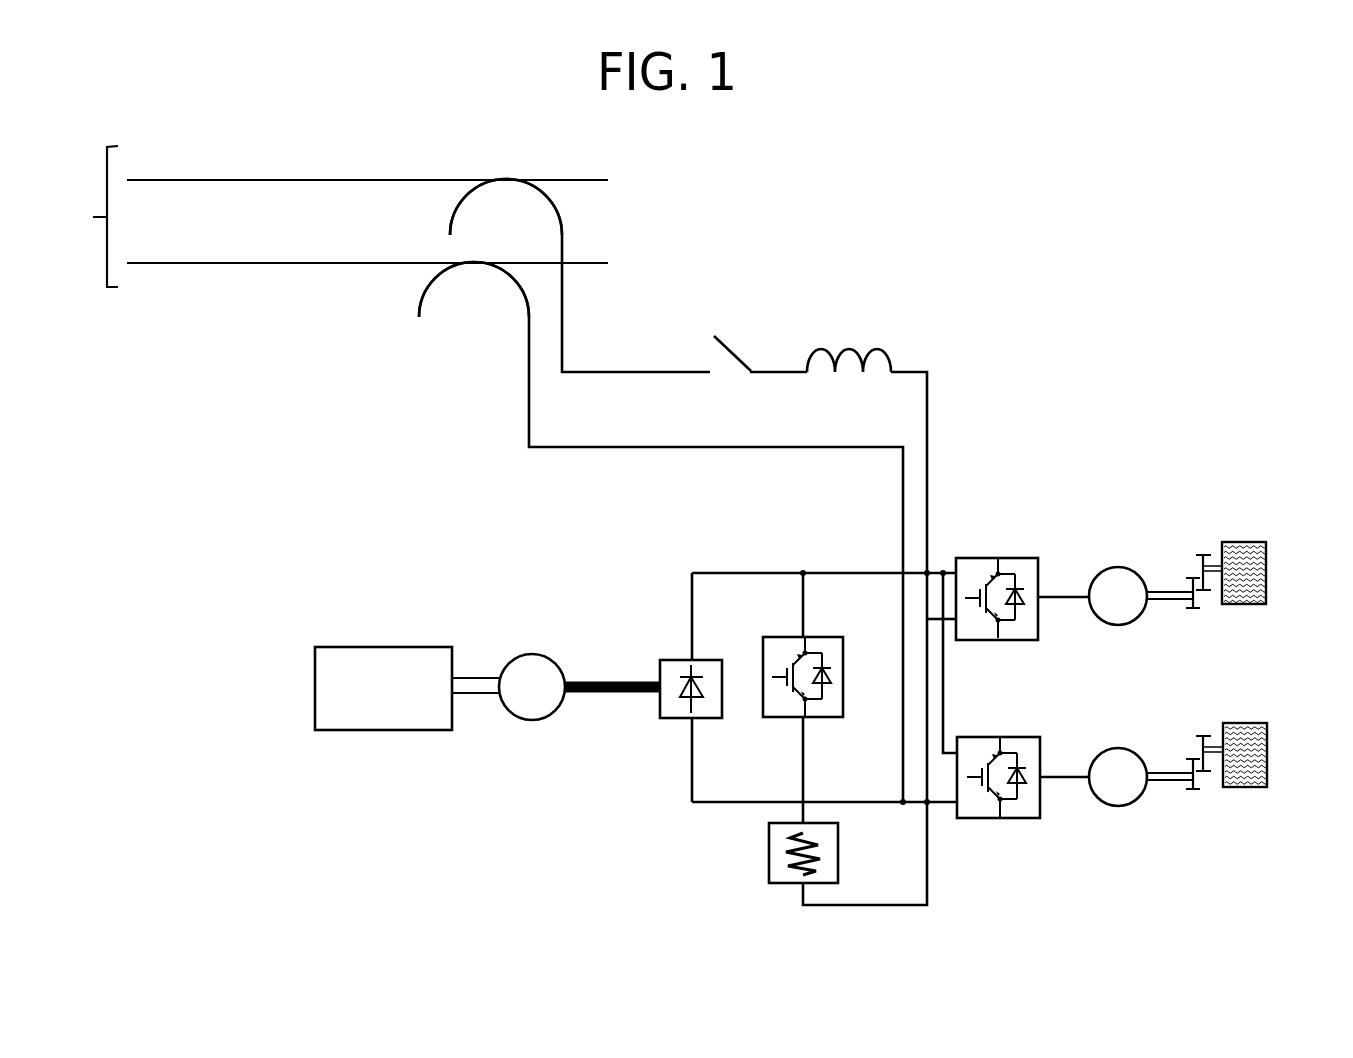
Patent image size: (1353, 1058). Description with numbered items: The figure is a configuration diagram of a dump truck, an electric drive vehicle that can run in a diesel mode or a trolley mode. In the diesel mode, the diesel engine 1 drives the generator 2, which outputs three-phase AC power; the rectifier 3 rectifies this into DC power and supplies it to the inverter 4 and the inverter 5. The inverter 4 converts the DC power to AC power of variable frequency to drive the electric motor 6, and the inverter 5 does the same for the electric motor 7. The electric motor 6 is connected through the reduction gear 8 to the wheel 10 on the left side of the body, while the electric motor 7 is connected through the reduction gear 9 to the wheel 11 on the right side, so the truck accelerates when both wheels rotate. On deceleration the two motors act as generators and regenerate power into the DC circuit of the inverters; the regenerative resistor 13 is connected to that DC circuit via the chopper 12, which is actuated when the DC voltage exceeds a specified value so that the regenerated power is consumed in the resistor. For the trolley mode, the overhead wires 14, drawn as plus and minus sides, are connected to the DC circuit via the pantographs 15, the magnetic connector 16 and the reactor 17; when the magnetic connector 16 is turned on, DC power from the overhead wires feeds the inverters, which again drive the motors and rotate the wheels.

The diesel engine 1 is at (437, 655).
The generator 2 is at (532, 655).
The rectifier 3 is at (700, 657).
The inverter 4 is at (1018, 566).
The inverter 5 is at (1018, 745).
The electric motor 6 is at (1118, 568).
The electric motor 7 is at (1118, 755).
The reduction gear 8 is at (1203, 553).
The reduction gear 9 is at (1203, 735).
The wheel 10 is at (1258, 540).
The wheel 11 is at (1258, 722).
The chopper 12 is at (833, 665).
The regenerative resistor 13 is at (823, 836).
The overhead wires 14 is at (113, 146).
The pantographs 15 is at (541, 196).
The magnetic connector 16 is at (724, 352).
The reactor 17 is at (880, 350).